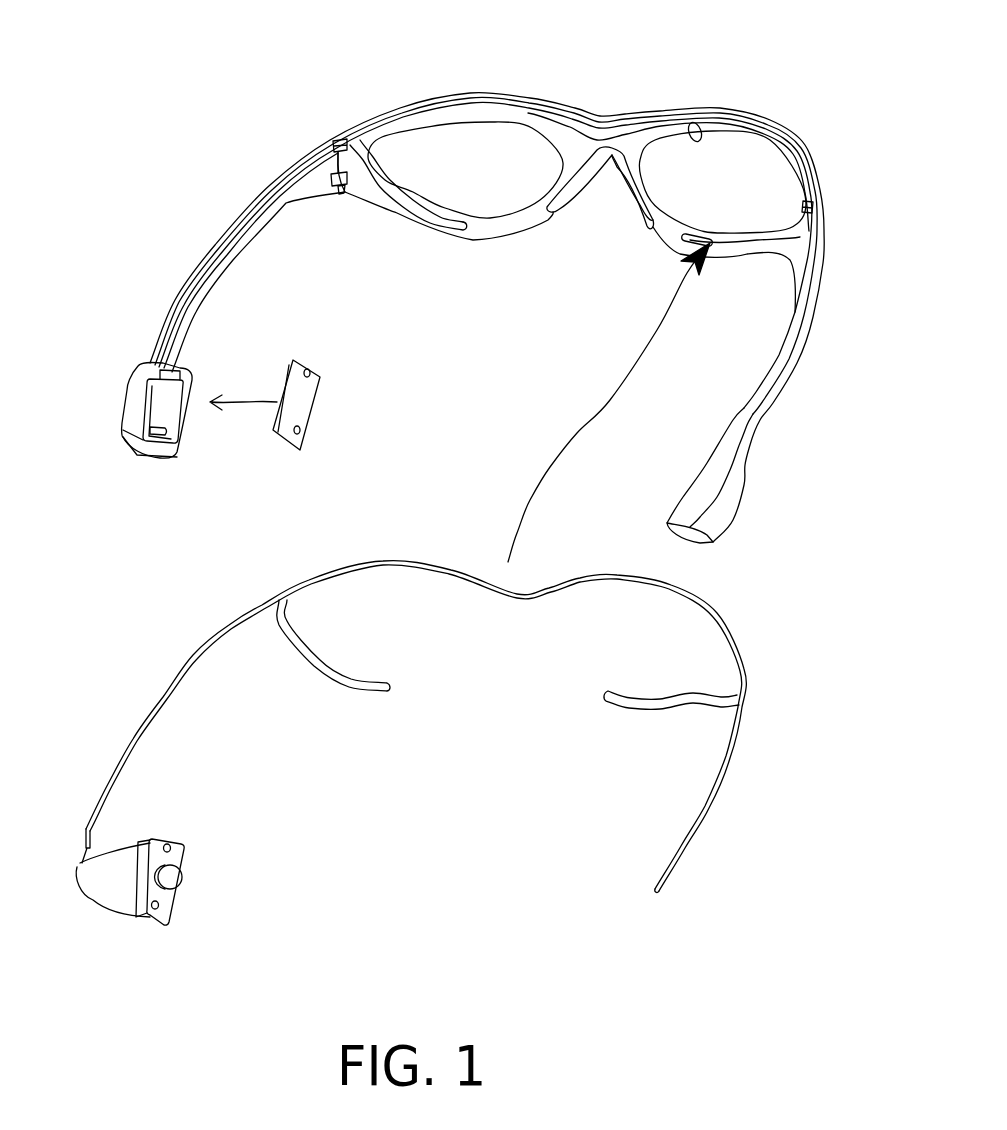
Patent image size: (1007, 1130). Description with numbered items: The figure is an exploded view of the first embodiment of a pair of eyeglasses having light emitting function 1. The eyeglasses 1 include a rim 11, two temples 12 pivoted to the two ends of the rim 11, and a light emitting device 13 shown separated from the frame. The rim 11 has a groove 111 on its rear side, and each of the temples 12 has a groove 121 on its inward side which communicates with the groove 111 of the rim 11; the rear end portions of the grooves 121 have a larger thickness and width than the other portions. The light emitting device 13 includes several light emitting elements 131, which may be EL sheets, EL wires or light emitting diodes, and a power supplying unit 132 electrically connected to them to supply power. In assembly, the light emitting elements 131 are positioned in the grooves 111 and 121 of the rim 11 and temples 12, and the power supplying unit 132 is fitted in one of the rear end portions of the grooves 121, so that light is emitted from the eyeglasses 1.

The pair of eyeglasses having light emitting function 1 is at (583, 97).
The rim 11 is at (667, 238).
The groove 111 is at (698, 128).
The temple 12 is at (218, 242).
The groove 121 is at (305, 195).
The light emitting device 13 is at (417, 705).
The light emitting element 131 is at (552, 592).
The power supplying unit 132 is at (170, 878).